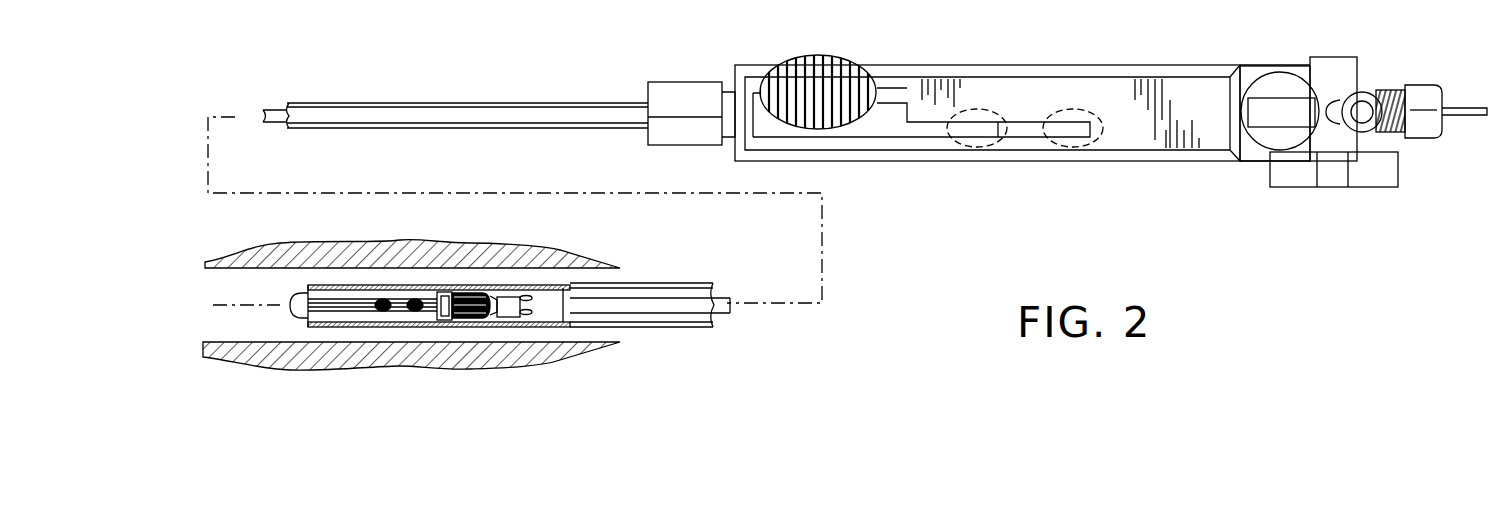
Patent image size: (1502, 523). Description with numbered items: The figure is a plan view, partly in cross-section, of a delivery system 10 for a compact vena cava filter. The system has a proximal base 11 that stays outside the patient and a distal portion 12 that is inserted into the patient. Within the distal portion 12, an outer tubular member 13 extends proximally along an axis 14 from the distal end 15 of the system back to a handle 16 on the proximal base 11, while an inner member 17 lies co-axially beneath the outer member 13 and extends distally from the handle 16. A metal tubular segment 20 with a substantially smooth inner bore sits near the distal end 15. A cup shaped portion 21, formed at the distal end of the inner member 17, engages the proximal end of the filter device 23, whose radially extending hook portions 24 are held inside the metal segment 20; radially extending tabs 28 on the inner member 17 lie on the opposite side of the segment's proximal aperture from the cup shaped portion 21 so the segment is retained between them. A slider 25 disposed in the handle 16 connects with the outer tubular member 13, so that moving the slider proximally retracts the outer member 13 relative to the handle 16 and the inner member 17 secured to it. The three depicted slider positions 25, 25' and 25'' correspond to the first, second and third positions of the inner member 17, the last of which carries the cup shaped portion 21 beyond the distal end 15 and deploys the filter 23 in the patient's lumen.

The delivery system 10 is at (545, 68).
The proximal base 11 is at (692, 66).
The distal portion 12 is at (640, 263).
The outer tubular member 13 is at (415, 108).
The axis 14 is at (236, 110).
The distal end 15 is at (300, 283).
The handle 16 is at (910, 161).
The inner member 17 is at (552, 303).
The metal tubular segment 20 is at (454, 292).
The cup shaped portion 21 is at (497, 320).
The device 23 is at (370, 297).
The hook portions 24 is at (475, 295).
The slider 25 is at (826, 74).
The second position of slider 25' is at (988, 90).
The third position of slider 25'' is at (1086, 90).
The tabs 28 is at (525, 318).